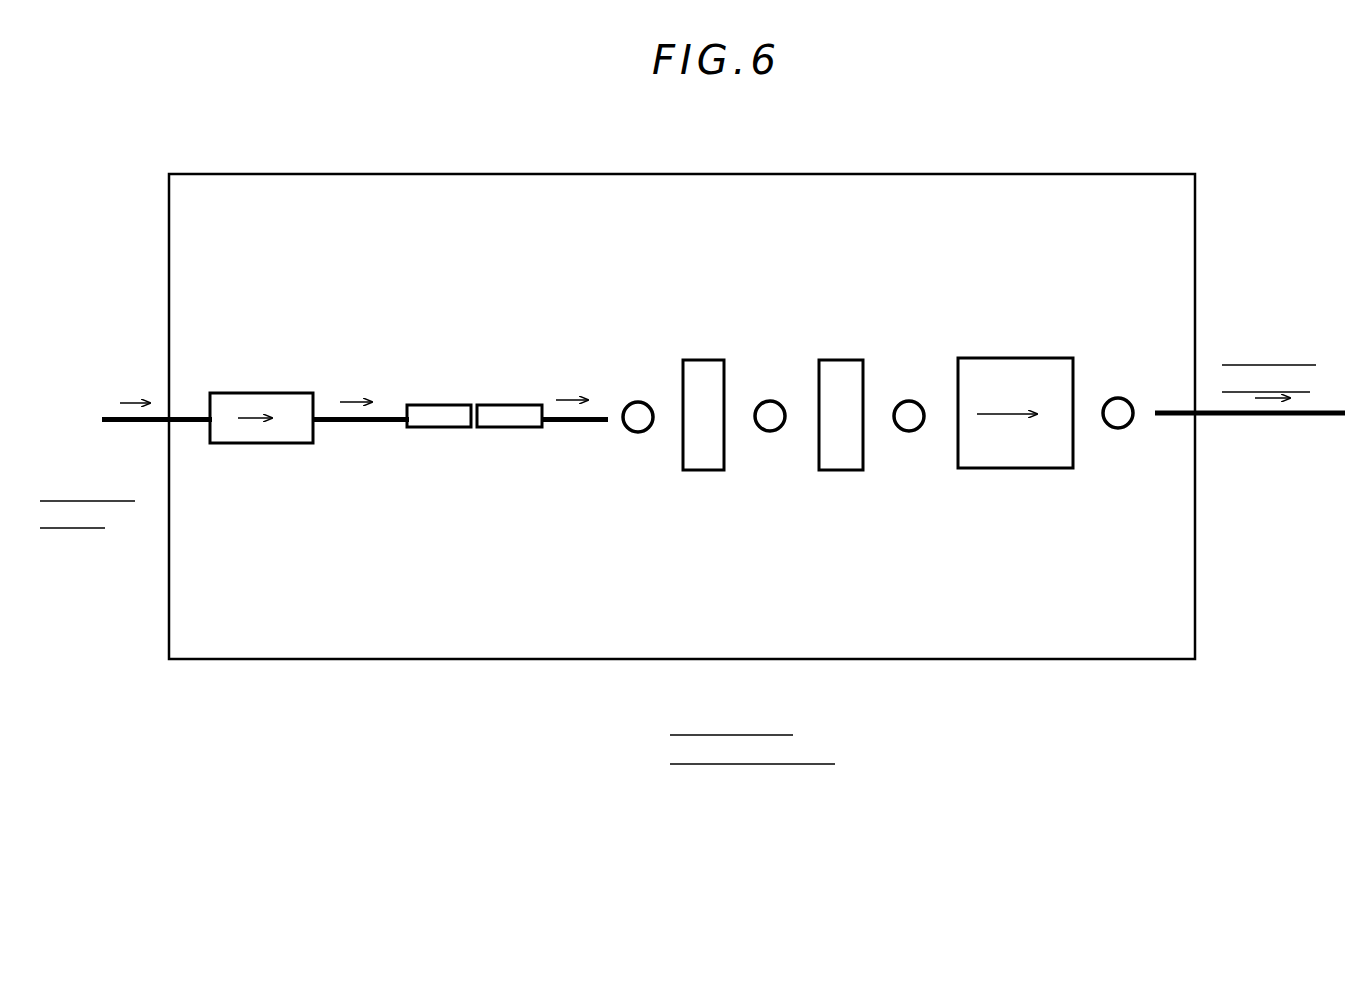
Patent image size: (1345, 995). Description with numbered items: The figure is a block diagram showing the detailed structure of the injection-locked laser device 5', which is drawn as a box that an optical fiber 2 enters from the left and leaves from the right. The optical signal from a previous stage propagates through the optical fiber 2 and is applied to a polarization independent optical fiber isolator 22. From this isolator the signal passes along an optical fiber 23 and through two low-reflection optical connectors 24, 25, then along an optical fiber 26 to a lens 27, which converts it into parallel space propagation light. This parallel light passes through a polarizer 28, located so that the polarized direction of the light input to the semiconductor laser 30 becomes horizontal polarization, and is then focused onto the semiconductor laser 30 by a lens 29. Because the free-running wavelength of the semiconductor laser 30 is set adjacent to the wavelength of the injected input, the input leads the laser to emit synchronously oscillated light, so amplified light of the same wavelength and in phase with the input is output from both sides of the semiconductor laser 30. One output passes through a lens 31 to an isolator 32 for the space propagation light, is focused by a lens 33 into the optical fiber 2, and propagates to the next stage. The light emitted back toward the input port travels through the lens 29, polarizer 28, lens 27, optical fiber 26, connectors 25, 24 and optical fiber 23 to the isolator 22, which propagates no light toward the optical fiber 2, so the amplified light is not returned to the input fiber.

The optical fiber 2 is at (122, 424).
The injection-locked laser device 5' is at (682, 469).
The polarization independent optical fiber isolator 22 is at (233, 393).
The optical fiber 23 is at (340, 425).
The optical connector 24 is at (432, 405).
The optical connector 25 is at (515, 405).
The optical fiber 26 is at (573, 422).
The lens 27 is at (637, 433).
The polarizer 28 is at (699, 360).
The lens 29 is at (768, 432).
The semiconductor laser 30 is at (843, 358).
The lens 31 is at (910, 432).
The isolator 32 is at (1005, 470).
The lens 33 is at (1118, 430).